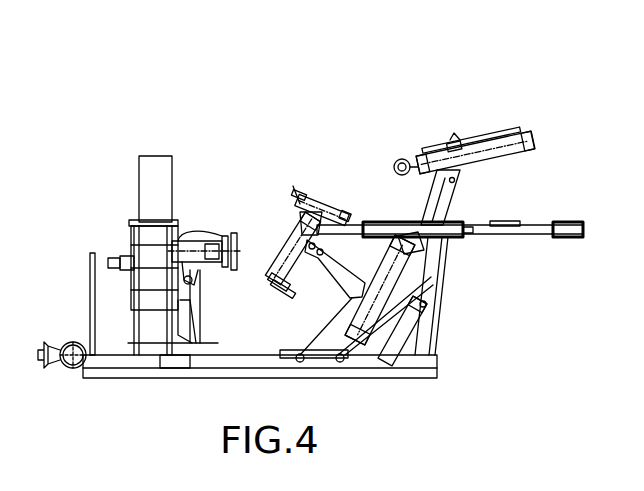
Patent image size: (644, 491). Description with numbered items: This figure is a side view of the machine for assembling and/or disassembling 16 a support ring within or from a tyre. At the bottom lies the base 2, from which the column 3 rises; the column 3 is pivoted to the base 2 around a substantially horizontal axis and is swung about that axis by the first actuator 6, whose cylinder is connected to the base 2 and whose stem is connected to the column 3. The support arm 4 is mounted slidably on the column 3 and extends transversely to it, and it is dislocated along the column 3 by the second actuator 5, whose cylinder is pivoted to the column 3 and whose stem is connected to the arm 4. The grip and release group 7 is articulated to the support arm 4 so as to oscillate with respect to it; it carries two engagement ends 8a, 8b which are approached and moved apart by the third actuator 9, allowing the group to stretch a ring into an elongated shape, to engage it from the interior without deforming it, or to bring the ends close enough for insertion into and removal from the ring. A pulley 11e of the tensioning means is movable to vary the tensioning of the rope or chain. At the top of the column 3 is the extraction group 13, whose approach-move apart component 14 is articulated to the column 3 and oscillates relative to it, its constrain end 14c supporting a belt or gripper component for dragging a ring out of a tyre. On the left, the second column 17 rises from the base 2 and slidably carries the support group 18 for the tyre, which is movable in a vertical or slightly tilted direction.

The base 2 is at (438, 372).
The column 3 is at (448, 208).
The support arm 4 is at (338, 268).
The second actuator 5 is at (412, 288).
The first actuator 6 is at (420, 326).
The grip and release group 7 is at (303, 213).
The engagement end 8a is at (322, 212).
The engagement end 8b is at (294, 290).
The third actuator 9 is at (283, 250).
The pulley 11e is at (572, 238).
The extraction group 13 is at (419, 147).
The approach-move apart component 14 is at (518, 156).
The constrain end 14c is at (399, 158).
The machine for assembling and/or disassembling 16 is at (253, 146).
The second column 17 is at (138, 191).
The support group 18 is at (208, 240).